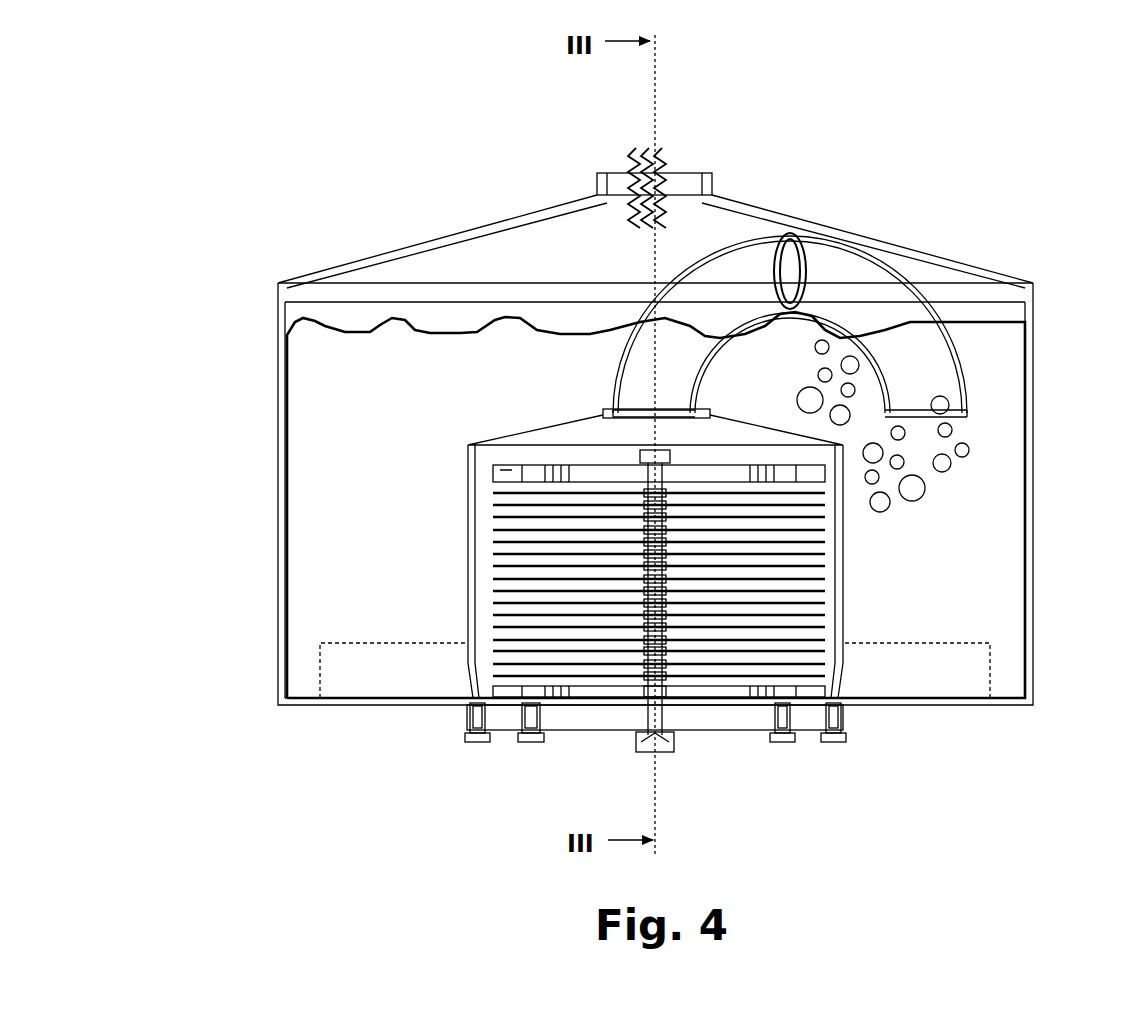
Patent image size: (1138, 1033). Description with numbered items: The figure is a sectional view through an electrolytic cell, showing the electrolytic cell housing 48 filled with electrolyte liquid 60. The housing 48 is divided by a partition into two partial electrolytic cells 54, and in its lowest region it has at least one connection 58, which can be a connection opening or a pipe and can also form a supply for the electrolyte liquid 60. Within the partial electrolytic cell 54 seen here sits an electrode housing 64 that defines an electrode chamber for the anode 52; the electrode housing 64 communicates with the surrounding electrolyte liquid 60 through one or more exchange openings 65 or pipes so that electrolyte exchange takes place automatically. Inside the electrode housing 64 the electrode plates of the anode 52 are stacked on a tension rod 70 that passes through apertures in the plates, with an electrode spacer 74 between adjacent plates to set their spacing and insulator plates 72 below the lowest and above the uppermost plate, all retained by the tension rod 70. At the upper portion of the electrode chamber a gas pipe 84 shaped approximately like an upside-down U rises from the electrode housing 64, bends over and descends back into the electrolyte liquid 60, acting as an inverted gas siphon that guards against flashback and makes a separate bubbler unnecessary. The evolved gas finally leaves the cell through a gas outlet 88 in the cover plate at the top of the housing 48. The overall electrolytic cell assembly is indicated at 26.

The filter assembly 26 is at (498, 145).
The electrolytic cell housing 48 is at (278, 566).
The partial electrolytic cell 54 is at (340, 310).
The electrolyte liquid 60 is at (345, 370).
The gas outlet 88 is at (703, 152).
The gas pipe 84 is at (855, 243).
The electrode housing 64 is at (842, 553).
The anode 52 is at (830, 595).
The insulator plate 72 is at (505, 470).
The tension rod 70 is at (663, 672).
The electrode spacer 74 is at (680, 698).
The connection 58 is at (332, 660).
The exchange opening 65 is at (463, 688).